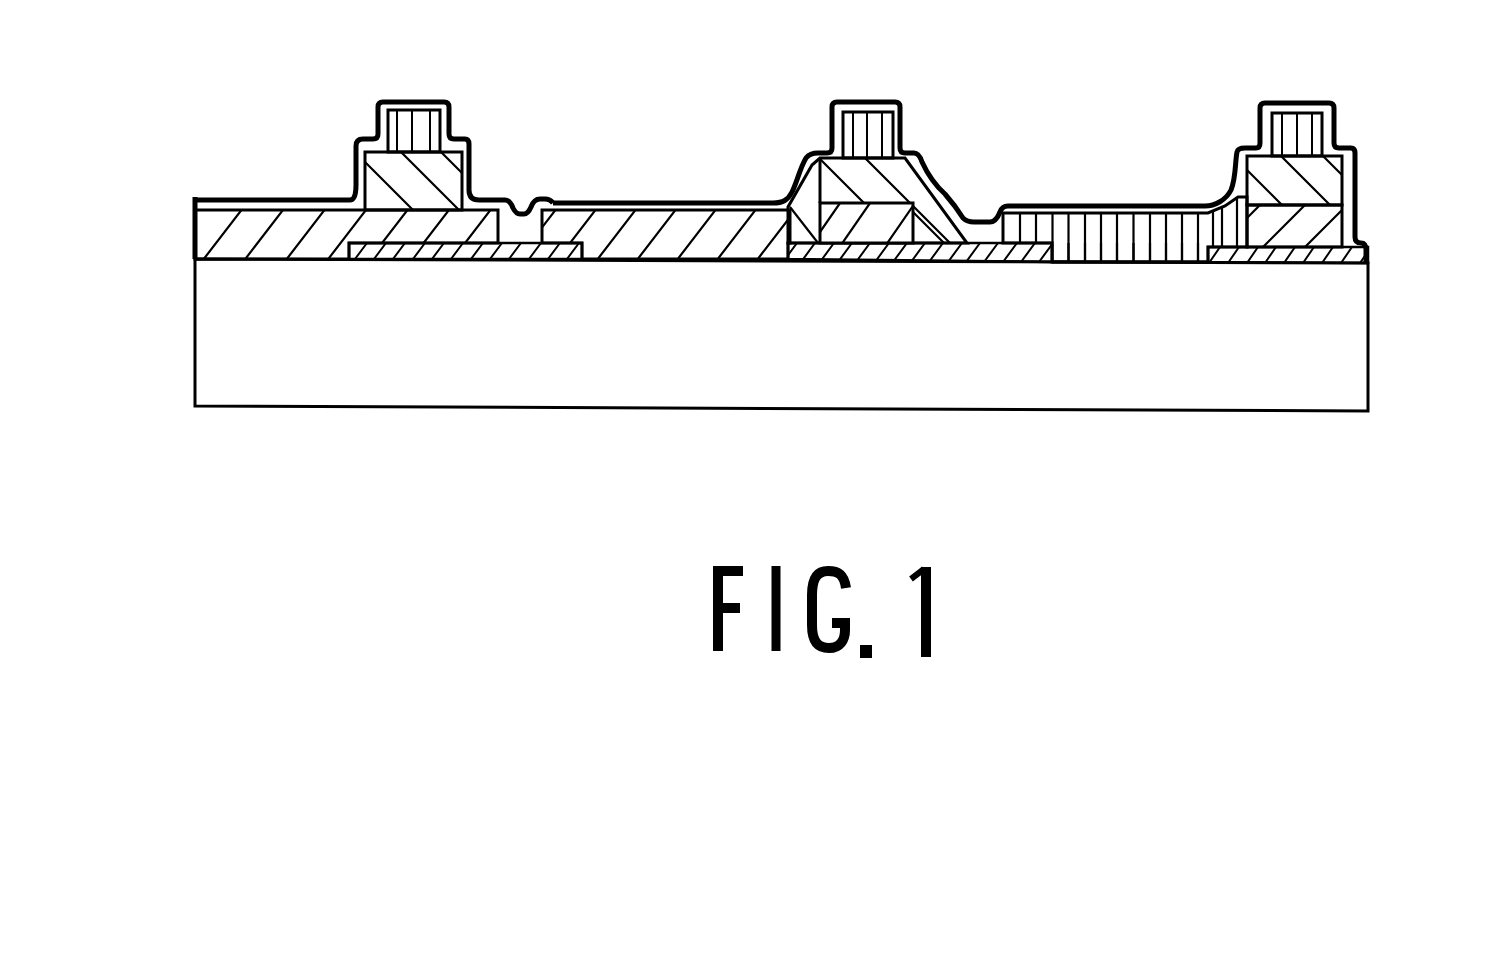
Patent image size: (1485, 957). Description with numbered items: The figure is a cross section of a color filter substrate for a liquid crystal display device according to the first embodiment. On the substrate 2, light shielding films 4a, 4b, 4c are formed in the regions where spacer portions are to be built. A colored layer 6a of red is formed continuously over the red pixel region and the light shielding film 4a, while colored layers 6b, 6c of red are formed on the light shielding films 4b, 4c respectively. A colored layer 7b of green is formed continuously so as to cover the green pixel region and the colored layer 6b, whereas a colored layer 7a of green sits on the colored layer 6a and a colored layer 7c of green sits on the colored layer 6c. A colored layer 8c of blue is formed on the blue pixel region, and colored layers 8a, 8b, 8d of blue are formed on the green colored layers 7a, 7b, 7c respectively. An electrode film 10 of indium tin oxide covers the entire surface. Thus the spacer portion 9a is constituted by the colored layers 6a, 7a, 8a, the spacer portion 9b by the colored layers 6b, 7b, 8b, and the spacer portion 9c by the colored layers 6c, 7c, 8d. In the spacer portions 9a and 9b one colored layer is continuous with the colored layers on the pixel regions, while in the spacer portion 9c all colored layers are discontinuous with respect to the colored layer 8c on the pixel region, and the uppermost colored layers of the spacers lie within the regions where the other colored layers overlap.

The substrate 2 is at (1348, 337).
The light shielding film 4a is at (487, 253).
The light shielding film 4b is at (895, 255).
The light shielding film 4c is at (1298, 260).
The colored layer of red 6a is at (262, 222).
The colored layer of red 6b is at (895, 213).
The colored layer of red 6c is at (1320, 237).
The colored layer of green 7a is at (443, 183).
The colored layer of green 7b is at (680, 235).
The colored layer of green 7c is at (1323, 187).
The colored layer of blue 8a is at (421, 122).
The colored layer of blue 8b is at (861, 123).
The colored layer of blue 8c is at (1122, 258).
The colored layer of blue 8d is at (1301, 123).
The spacer portion 9a is at (490, 115).
The spacer portion 9b is at (990, 120).
The spacer portion 9c is at (1373, 124).
The electrode film 10 is at (1078, 213).